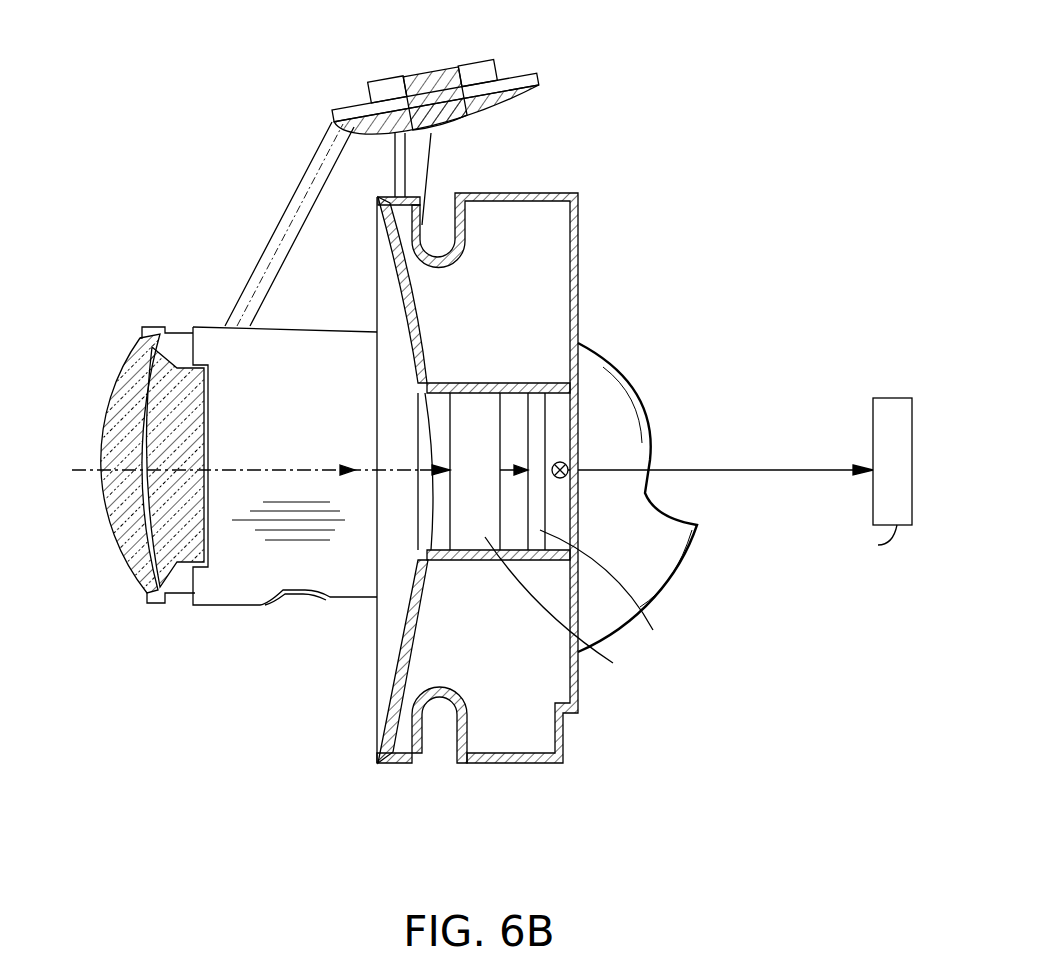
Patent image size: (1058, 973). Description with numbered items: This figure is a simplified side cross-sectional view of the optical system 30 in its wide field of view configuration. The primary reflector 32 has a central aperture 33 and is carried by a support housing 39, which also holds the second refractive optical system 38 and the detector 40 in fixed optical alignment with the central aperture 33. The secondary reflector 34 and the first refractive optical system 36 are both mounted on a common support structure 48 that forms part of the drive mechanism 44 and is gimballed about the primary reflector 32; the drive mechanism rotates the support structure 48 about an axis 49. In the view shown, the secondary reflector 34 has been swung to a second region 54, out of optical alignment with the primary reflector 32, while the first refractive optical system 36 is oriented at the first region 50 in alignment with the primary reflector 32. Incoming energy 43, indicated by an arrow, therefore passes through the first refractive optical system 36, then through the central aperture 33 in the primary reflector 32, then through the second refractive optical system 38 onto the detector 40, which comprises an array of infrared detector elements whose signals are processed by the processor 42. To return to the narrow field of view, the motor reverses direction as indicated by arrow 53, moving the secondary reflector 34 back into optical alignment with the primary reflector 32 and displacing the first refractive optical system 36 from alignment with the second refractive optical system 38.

The optical system 30 is at (217, 192).
The primary reflector 32 is at (402, 303).
The central aperture 33 is at (412, 418).
The secondary reflector 34 is at (502, 108).
The first refractive optical system 36 is at (133, 592).
The second refractive optical system 38 is at (471, 397).
The support housing 39 is at (580, 207).
The detector 40 is at (553, 390).
The processor 42 is at (897, 398).
The energy 43 is at (80, 466).
The drive mechanism 44 is at (633, 395).
The support structure 48 is at (265, 248).
The axis 49 is at (580, 466).
The first region 50 is at (153, 305).
The arrow 53 is at (610, 247).
The second region 54 is at (562, 87).